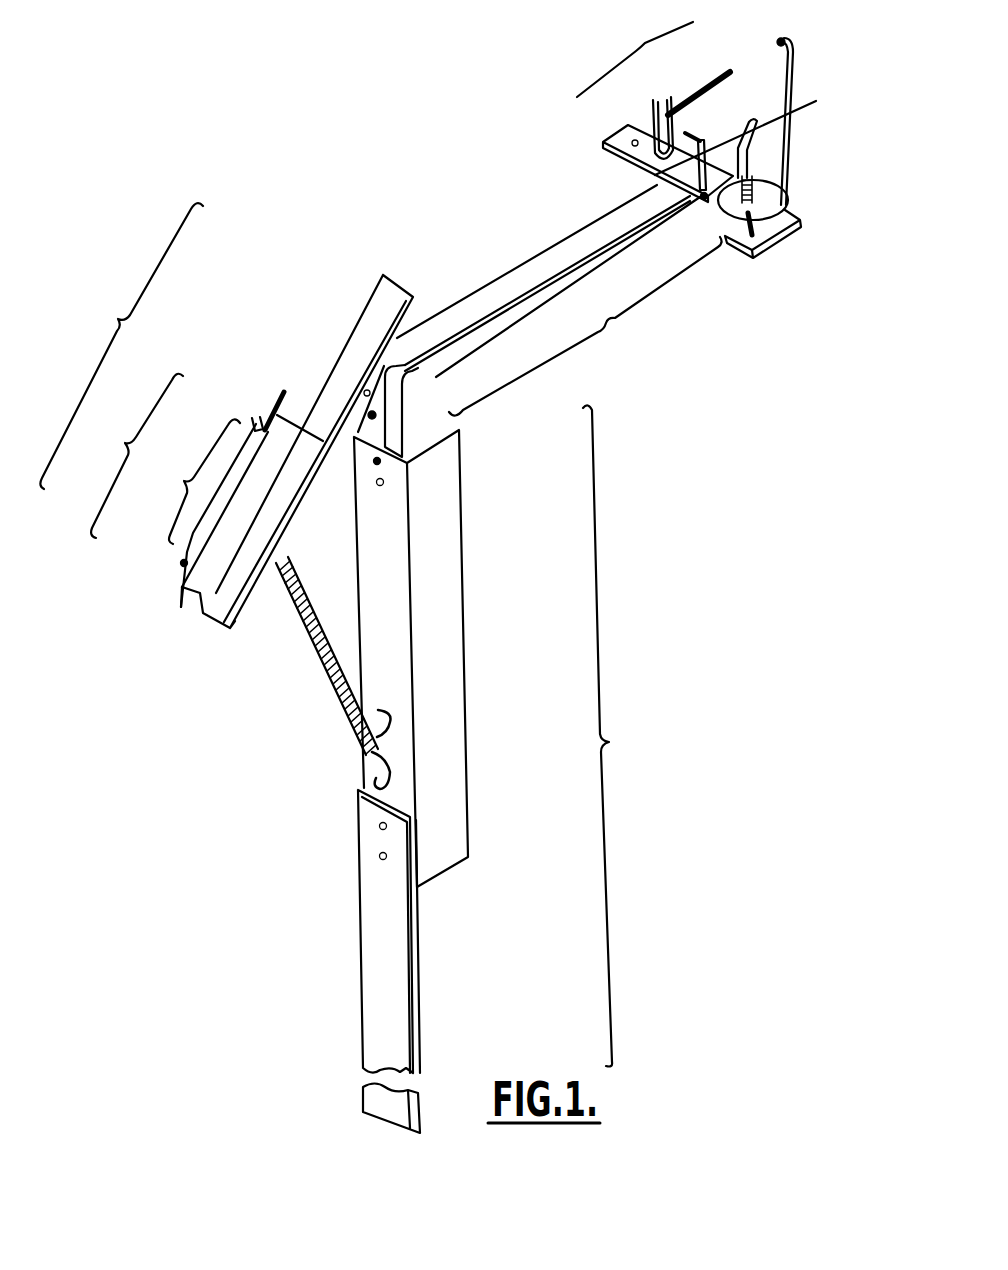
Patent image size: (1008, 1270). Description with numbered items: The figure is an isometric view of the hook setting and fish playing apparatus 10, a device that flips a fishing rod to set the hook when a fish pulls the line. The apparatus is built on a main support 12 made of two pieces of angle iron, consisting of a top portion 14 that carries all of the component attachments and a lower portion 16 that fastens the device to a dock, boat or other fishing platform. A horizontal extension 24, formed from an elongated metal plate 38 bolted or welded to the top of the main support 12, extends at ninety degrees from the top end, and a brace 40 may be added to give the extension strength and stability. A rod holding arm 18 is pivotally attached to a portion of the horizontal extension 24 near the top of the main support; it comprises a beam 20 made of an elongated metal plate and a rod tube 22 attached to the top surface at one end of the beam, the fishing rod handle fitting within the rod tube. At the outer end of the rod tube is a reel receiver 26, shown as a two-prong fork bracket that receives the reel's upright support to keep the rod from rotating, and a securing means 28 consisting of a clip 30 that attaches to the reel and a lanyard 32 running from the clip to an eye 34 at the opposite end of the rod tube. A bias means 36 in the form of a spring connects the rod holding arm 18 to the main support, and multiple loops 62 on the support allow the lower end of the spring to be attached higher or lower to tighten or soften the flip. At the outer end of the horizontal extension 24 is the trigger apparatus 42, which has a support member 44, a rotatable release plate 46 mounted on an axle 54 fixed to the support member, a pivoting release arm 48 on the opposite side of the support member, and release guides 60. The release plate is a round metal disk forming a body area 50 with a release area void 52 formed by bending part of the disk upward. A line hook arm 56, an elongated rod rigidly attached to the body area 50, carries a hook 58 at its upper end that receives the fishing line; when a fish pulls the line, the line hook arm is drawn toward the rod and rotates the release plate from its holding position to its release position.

The hook setting and fish playing apparatus 10 is at (703, 429).
The main support 12 is at (622, 735).
The top portion 14 is at (457, 700).
The lower portion 16 is at (393, 948).
The rod holding arm 18 is at (121, 346).
The beam 20 is at (343, 363).
The rod tube 22 is at (200, 587).
The horizontal extension 24 is at (585, 326).
The reel receiver 26 is at (277, 397).
The securing means 28 is at (166, 490).
The clip 30 is at (248, 422).
The lanyard 32 is at (186, 481).
The eye 34 is at (182, 570).
The bias means 36 is at (320, 660).
The elongated metal plate 38 is at (502, 275).
The brace 40 is at (423, 402).
The trigger apparatus 42 is at (635, 54).
The support member 44 is at (603, 150).
The rotatable release plate 46 is at (787, 192).
The pivoting release arm 48 is at (699, 88).
The body area 50 is at (748, 243).
The release area void 52 is at (700, 200).
The axle 54 is at (787, 208).
The line hook arm 56 is at (792, 128).
The hook 58 is at (776, 44).
The release guides 60 is at (753, 118).
The loops 62 is at (376, 704).